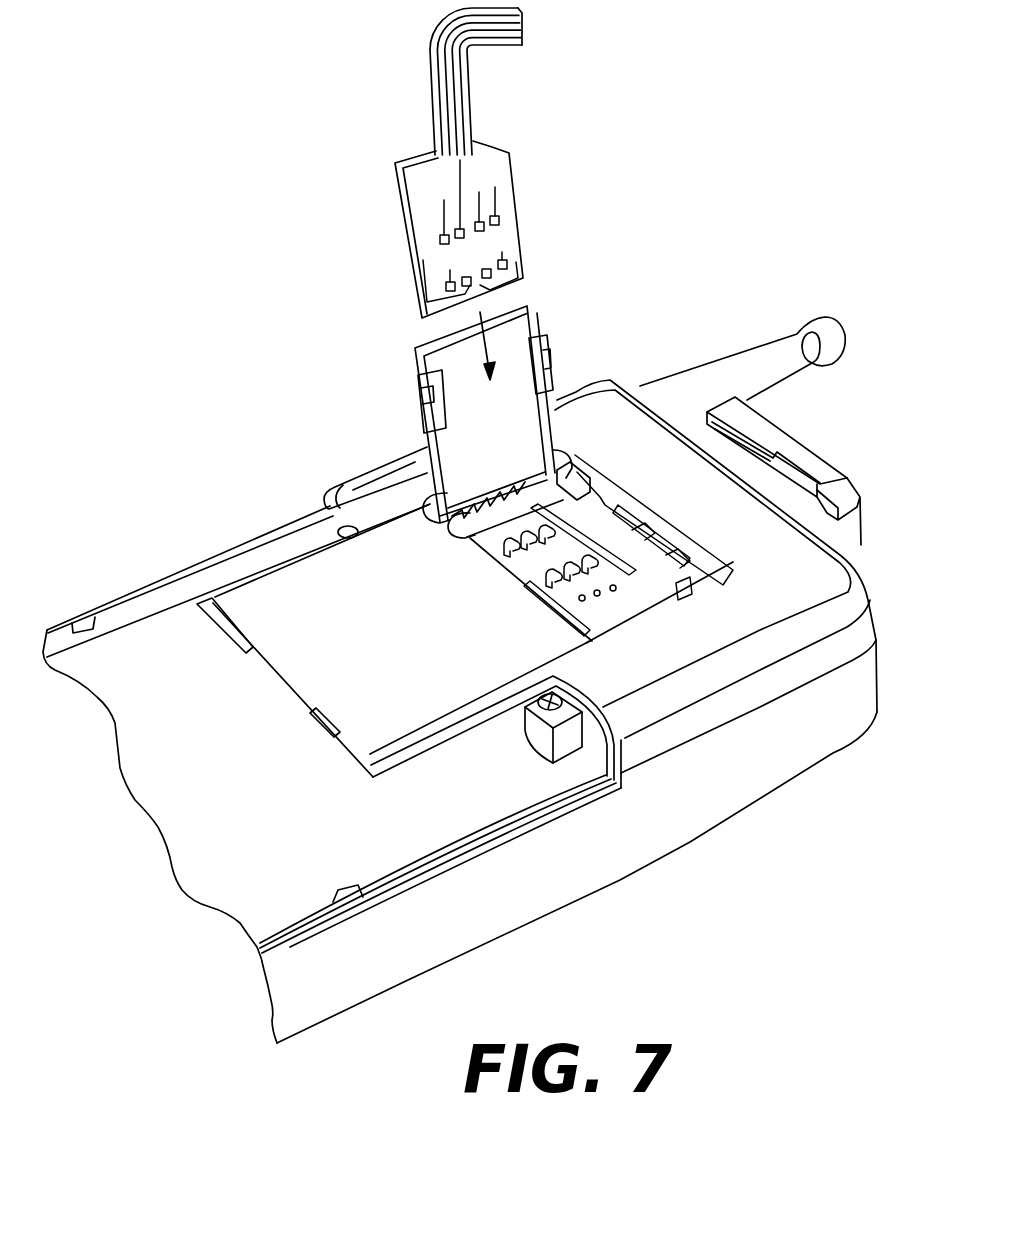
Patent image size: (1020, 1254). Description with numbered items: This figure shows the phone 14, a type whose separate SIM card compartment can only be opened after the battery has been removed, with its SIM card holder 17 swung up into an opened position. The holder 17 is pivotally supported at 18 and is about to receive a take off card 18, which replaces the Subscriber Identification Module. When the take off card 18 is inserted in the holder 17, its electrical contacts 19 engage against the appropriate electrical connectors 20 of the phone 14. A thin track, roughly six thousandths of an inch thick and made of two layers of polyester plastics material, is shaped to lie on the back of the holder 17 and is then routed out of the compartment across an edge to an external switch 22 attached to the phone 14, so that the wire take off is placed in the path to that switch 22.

The phone 14 is at (375, 481).
The SIM card holder 17 is at (523, 323).
The take off card 18 is at (510, 230).
The electrical contacts 19 is at (452, 285).
The electrical connectors 20 is at (540, 573).
The switch 22 is at (827, 470).